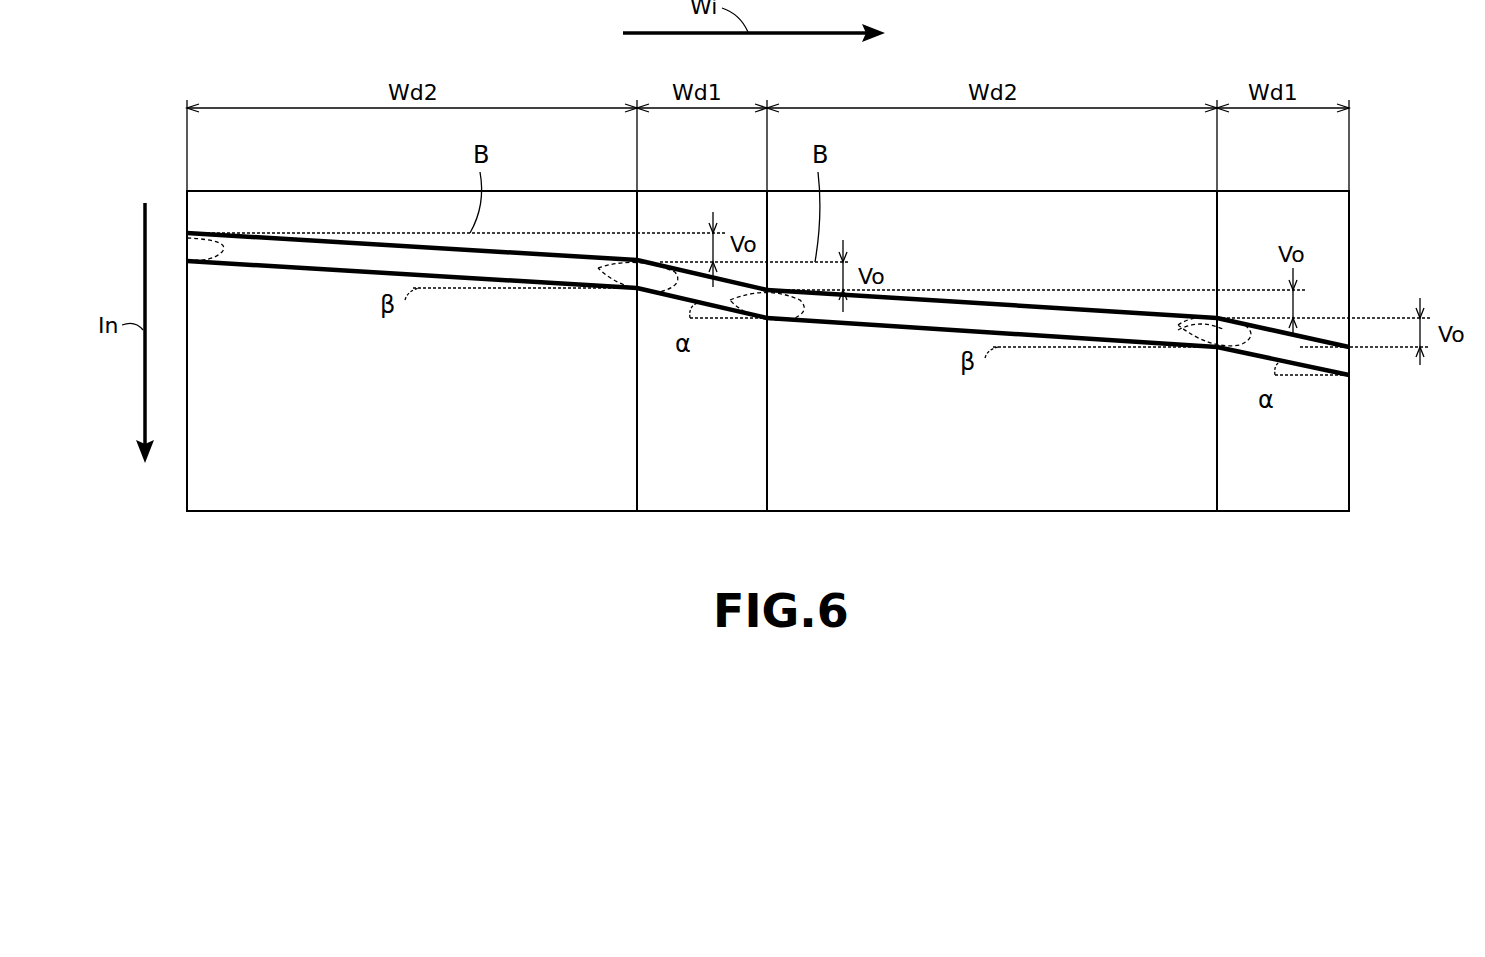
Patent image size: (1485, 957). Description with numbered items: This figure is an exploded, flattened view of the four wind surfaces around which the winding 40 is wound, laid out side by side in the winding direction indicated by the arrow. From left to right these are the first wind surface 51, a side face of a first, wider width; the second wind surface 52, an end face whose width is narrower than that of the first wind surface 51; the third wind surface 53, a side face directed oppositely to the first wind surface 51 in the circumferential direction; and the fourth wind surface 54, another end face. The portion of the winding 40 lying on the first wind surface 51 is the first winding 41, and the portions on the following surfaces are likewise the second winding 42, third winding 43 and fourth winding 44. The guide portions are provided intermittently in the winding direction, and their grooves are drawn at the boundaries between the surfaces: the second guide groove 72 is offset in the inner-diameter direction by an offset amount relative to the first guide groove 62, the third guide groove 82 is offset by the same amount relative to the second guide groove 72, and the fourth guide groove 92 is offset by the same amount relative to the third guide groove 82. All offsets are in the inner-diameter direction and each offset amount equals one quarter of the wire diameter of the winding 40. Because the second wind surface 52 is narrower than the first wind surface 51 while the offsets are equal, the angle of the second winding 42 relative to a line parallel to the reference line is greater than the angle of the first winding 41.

The winding 40 is at (768, 295).
The first winding 41 is at (348, 274).
The second winding 42 is at (665, 296).
The third winding 43 is at (915, 328).
The fourth winding 44 is at (1253, 356).
The first wind surface 51 is at (397, 486).
The second wind surface 52 is at (704, 485).
The third wind surface 53 is at (1002, 485).
The fourth wind surface 54 is at (1283, 485).
The first guide groove 62 is at (200, 240).
The second guide groove 72 is at (620, 290).
The third guide groove 82 is at (783, 322).
The fourth guide groove 92 is at (1200, 342).